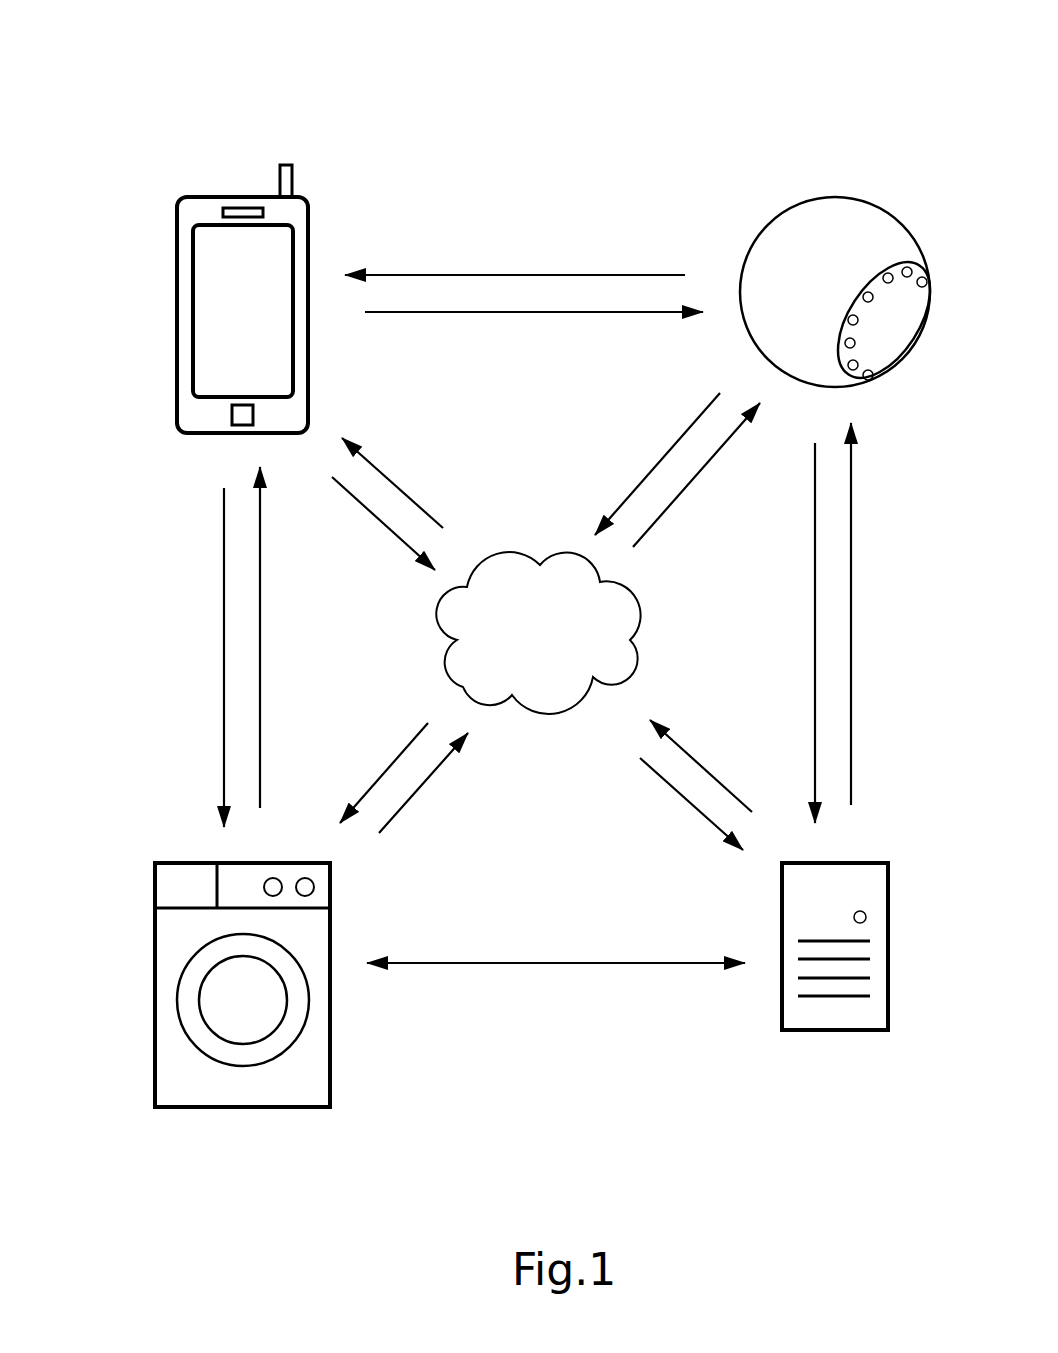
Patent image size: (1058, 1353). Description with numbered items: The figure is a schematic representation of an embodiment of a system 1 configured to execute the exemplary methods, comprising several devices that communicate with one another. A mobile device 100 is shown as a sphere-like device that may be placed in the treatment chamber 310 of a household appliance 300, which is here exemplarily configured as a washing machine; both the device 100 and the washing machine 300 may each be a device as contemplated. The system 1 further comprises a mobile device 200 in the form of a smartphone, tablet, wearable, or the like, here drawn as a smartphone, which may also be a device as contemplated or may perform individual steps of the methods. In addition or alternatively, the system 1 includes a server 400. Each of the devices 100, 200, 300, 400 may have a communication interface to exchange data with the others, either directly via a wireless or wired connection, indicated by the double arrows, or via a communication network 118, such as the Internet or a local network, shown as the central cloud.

The system 1 is at (627, 143).
The mobile device 100 is at (853, 198).
The communication network 118 is at (561, 642).
The mobile device 200 is at (209, 196).
The household appliance 300 is at (210, 1108).
The treatment chamber 310 is at (222, 1002).
The server 400 is at (858, 1032).